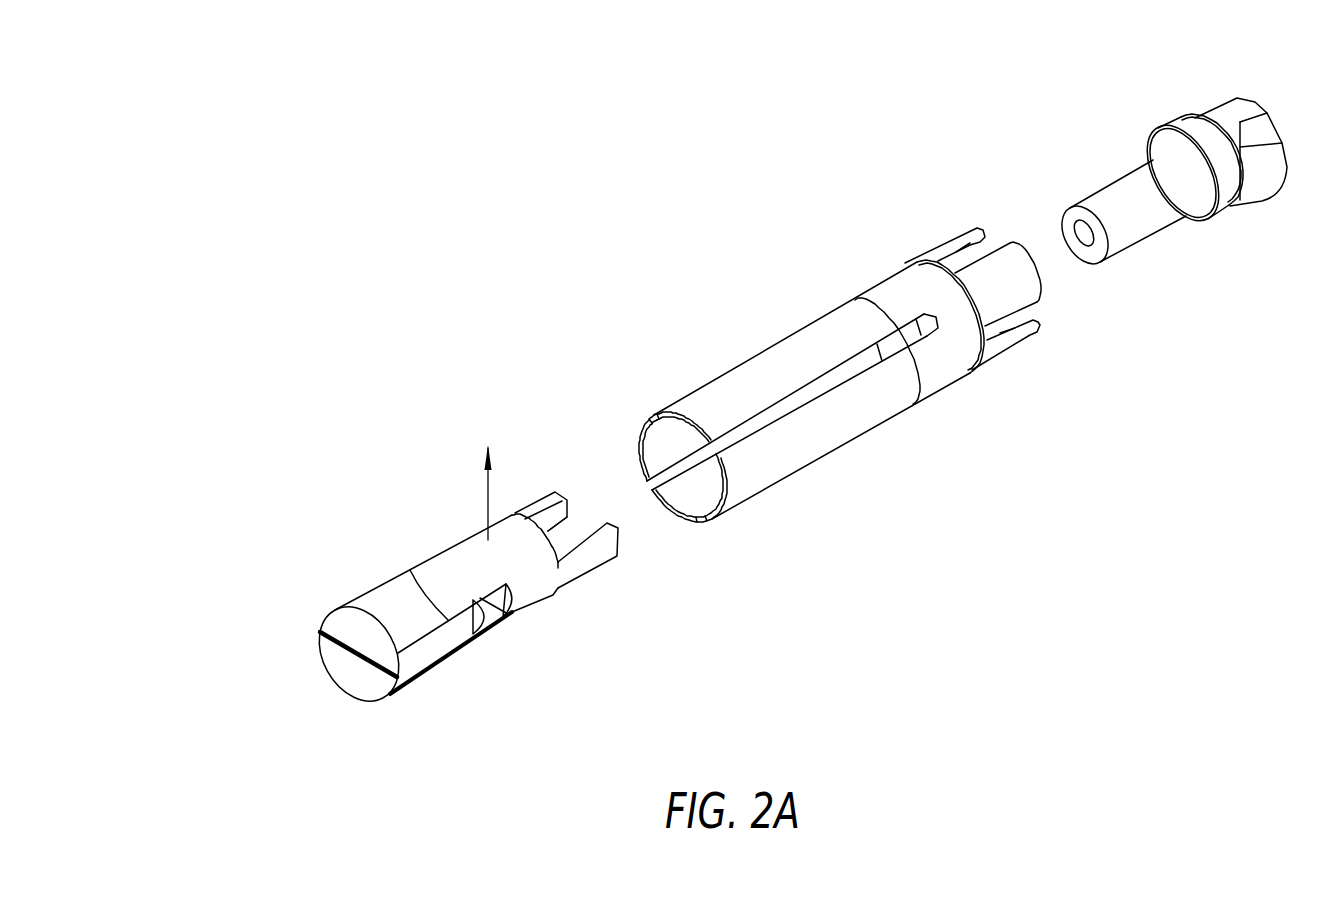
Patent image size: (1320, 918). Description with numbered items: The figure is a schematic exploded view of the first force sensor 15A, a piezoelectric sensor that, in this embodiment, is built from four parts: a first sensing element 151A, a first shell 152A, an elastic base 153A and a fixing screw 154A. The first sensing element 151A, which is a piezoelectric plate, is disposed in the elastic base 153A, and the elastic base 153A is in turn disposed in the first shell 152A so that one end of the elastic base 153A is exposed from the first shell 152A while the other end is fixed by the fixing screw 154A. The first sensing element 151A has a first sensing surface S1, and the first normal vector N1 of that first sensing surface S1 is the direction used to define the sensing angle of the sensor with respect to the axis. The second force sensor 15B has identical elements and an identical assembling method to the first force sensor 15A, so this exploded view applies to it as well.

The first force sensor 15A is at (313, 500).
The second force sensor 15B is at (757, 422).
The first sensing element 151A is at (457, 632).
The first shell 152A is at (768, 367).
The elastic base 153A is at (360, 686).
The fixing screw 154A is at (1138, 192).
The first sensing surface S1 is at (476, 555).
The first normal vector N1 is at (483, 478).